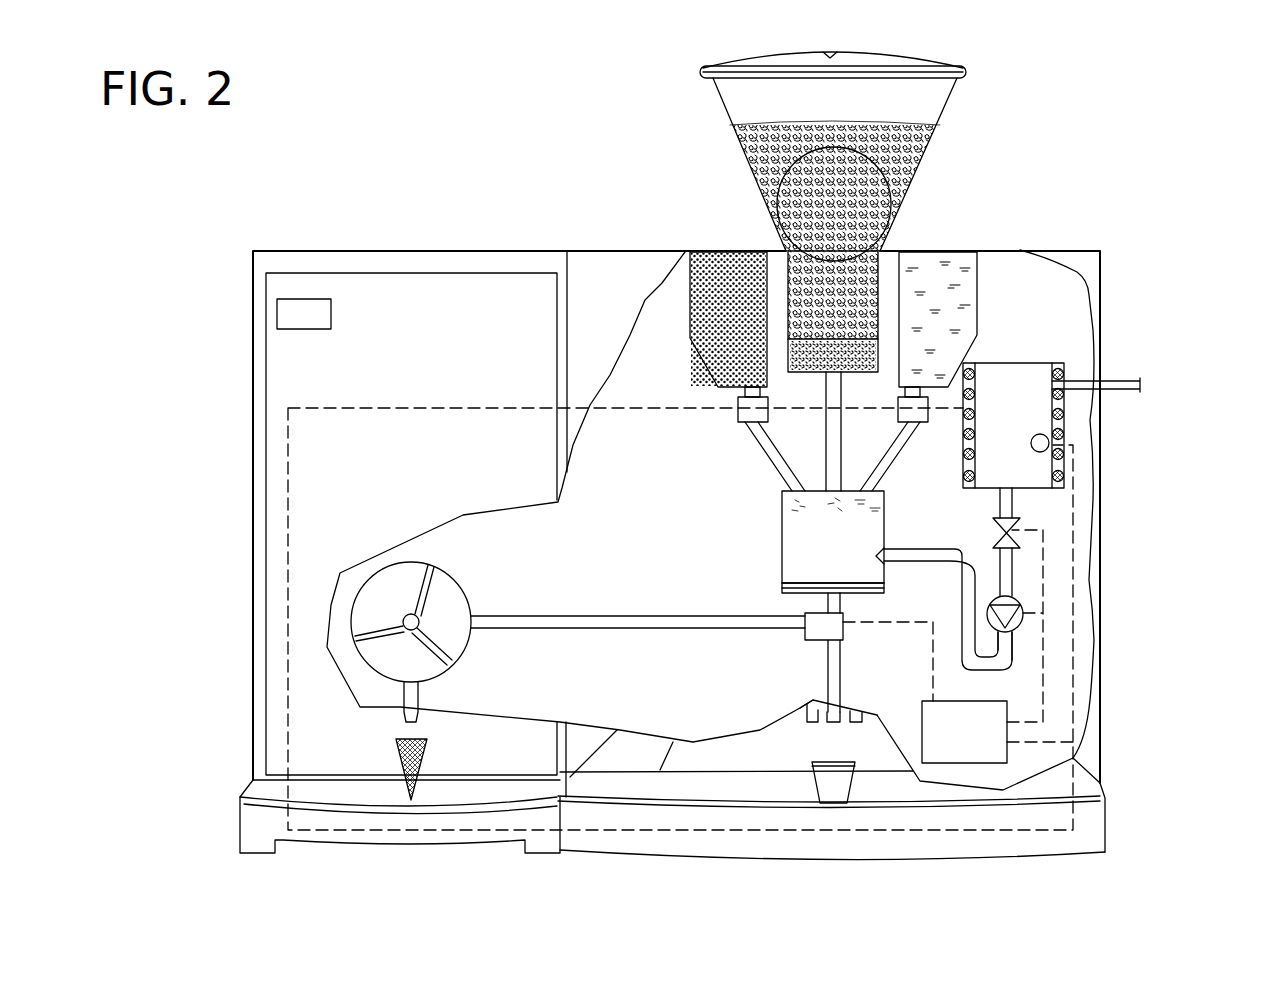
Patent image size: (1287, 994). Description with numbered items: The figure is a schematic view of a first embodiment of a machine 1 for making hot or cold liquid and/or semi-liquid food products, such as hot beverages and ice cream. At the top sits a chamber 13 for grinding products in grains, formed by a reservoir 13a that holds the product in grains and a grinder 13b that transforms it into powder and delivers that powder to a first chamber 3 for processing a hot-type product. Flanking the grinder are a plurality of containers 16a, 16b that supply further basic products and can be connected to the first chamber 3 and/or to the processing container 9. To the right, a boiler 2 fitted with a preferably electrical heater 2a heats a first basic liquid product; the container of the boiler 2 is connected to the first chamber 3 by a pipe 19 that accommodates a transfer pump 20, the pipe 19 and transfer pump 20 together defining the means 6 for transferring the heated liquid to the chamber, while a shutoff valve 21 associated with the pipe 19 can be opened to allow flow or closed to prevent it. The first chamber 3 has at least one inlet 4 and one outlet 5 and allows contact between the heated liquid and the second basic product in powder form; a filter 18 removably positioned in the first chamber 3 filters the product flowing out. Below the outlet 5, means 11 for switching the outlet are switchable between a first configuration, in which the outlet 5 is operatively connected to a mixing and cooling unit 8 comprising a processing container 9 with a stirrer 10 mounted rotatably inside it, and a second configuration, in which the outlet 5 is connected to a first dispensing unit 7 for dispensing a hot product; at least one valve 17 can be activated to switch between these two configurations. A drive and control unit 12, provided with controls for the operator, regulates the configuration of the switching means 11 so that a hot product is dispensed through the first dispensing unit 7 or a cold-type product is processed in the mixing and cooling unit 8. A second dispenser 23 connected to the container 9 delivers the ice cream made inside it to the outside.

The machine 1 is at (1157, 212).
The boiler 2 is at (1013, 440).
The heater 2a is at (1068, 420).
The first chamber 3 is at (774, 532).
The inlet 4 is at (858, 483).
The outlet 5 is at (846, 606).
The means for transferring 6 is at (1013, 597).
The first dispensing unit 7 is at (861, 730).
The mixing and cooling unit 8 is at (363, 665).
The processing container 9 is at (468, 655).
The stirrer 10 is at (373, 622).
The switching means 11 is at (814, 641).
The drive and control unit 12 is at (997, 646).
The chamber for grinding products in grains 13 is at (906, 196).
The reservoir 13a is at (713, 108).
The grinder 13b is at (813, 330).
The container 16a is at (689, 318).
The container 16b is at (979, 294).
The valve 17 is at (849, 637).
The filter 18 is at (798, 598).
The pipe 19 is at (1013, 668).
The transfer pump 20 is at (1024, 630).
The shutoff valve 21 is at (1021, 527).
The second dispenser 23 is at (401, 721).